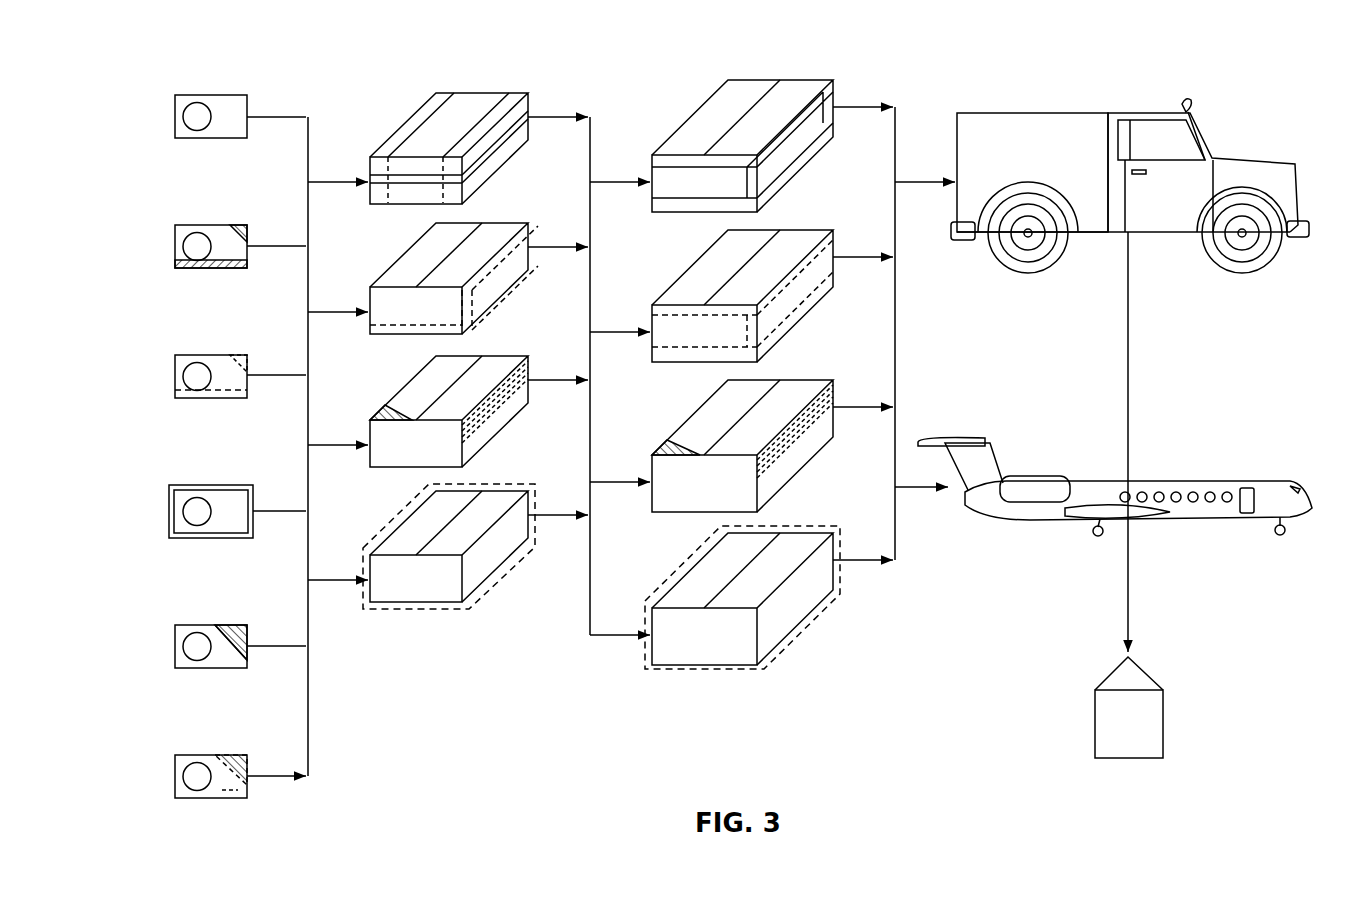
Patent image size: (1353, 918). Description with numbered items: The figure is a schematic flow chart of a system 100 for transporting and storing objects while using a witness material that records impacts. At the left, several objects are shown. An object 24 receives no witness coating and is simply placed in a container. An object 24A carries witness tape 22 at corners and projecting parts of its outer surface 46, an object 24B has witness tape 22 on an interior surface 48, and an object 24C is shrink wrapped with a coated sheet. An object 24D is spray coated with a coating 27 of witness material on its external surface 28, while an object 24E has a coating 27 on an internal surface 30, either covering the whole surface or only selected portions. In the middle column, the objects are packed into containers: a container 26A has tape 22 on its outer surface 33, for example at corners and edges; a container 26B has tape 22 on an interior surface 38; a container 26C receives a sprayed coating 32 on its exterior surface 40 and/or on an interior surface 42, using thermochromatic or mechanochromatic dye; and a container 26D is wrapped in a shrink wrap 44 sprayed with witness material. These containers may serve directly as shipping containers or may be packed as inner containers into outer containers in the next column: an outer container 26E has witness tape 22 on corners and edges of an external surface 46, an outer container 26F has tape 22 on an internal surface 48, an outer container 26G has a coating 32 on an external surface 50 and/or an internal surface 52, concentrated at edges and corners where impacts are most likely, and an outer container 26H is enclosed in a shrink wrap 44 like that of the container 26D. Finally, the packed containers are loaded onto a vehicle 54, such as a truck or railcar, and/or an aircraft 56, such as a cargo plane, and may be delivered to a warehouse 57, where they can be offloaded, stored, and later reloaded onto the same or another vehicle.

The system 100 is at (1278, 84).
The witness tape 22 is at (246, 226).
The object 24 is at (200, 94).
The object 24A is at (200, 224).
The object 24B is at (200, 354).
The object 24C is at (232, 515).
The object 24D is at (200, 624).
The object 24E is at (200, 754).
The container 26A is at (455, 112).
The container 26B is at (500, 236).
The container 26C is at (497, 376).
The container 26D is at (427, 589).
The outer container 26E is at (800, 140).
The outer container 26F is at (808, 279).
The outer container 26G is at (808, 443).
The outer container 26H is at (808, 594).
The coating 27 is at (232, 627).
The external surface 28 is at (222, 665).
The internal surface 30 is at (232, 755).
The coating 32 is at (390, 412).
The outer surface 33 is at (420, 118).
The interior surface 38 is at (532, 240).
The exterior surface 40 is at (430, 373).
The interior surface 42 is at (488, 424).
The shrink wrap 44 is at (488, 588).
The outer surface 46 is at (227, 236).
The interior surface 48 is at (212, 395).
The external surface 50 is at (720, 402).
The internal surface 52 is at (737, 480).
The vehicle 54 is at (1096, 102).
The aircraft 56 is at (1164, 476).
The warehouse 57 is at (1167, 723).